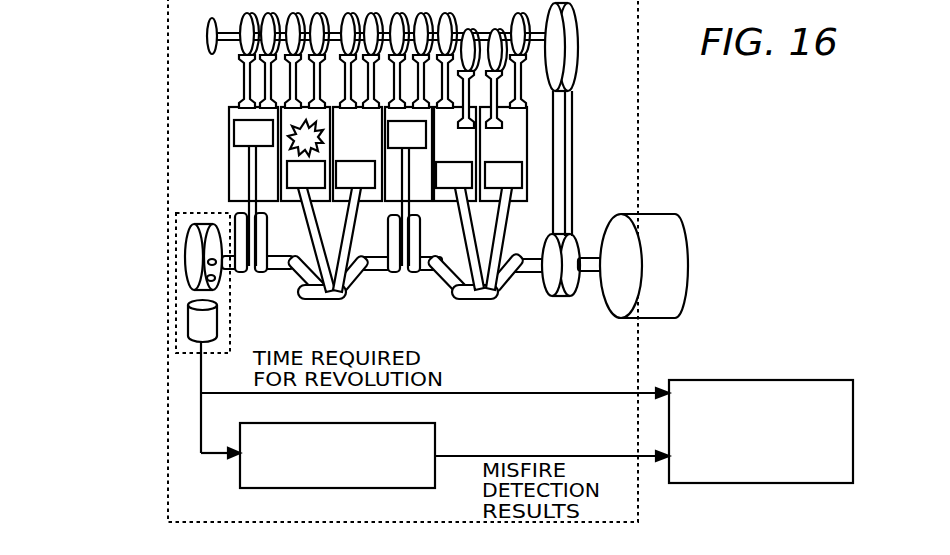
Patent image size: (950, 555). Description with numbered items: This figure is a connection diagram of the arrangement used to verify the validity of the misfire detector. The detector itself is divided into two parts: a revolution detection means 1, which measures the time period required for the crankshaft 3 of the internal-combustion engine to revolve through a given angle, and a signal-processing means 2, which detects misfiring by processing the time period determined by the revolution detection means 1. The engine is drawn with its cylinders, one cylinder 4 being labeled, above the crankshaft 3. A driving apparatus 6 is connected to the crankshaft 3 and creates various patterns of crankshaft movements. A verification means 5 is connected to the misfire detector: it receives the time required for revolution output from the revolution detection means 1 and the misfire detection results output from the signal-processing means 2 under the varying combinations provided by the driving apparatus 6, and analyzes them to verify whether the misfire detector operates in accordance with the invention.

The revolution detection means 1 is at (192, 224).
The signal-processing means 2 is at (255, 489).
The crankshaft 3 is at (532, 272).
The cylinder 4 is at (229, 172).
The verification means 5 is at (780, 380).
The driving apparatus 6 is at (687, 268).